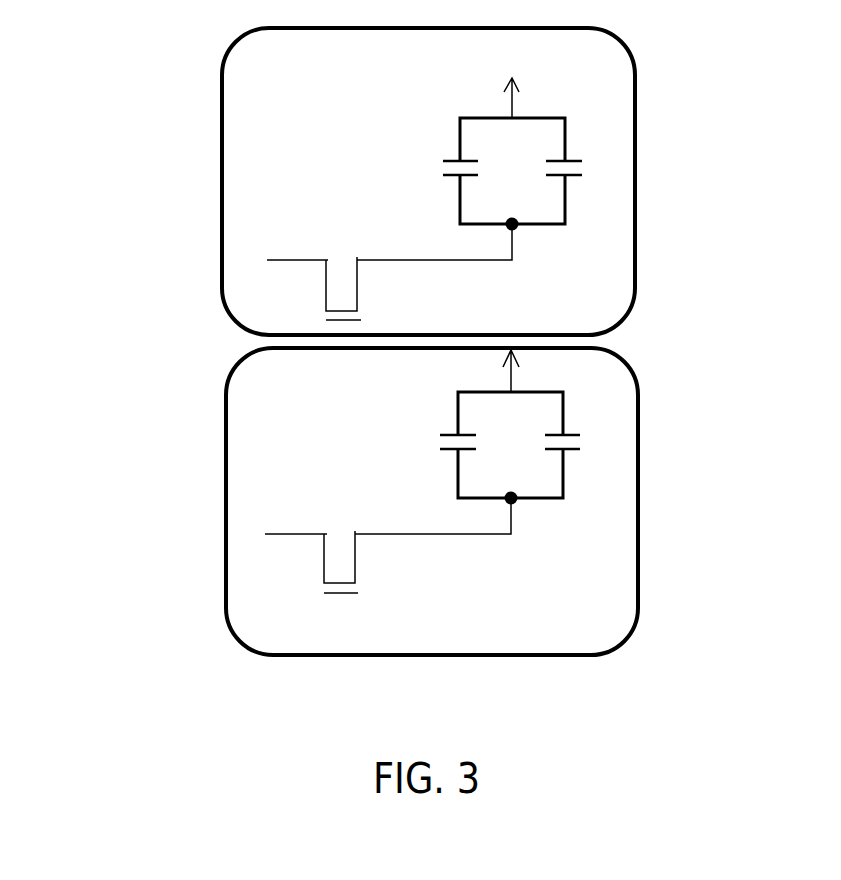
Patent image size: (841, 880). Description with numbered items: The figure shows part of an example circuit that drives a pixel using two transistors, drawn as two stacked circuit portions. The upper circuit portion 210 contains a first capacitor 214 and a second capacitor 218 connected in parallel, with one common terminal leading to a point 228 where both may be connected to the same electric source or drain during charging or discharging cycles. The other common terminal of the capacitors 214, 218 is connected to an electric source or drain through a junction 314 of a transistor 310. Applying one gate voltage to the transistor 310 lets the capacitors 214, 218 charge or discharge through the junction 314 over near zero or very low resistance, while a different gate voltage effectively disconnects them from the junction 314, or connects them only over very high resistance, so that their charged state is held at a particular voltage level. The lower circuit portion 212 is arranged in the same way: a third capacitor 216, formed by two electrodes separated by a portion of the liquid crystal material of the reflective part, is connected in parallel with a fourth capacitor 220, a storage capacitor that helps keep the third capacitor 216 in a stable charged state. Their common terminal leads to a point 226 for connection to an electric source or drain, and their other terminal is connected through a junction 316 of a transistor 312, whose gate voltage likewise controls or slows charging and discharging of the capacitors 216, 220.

The circuit portion 210 is at (593, 54).
The circuit portion 212 is at (583, 612).
The first capacitor 214 is at (570, 167).
The third capacitor 216 is at (562, 440).
The second capacitor 218 is at (440, 167).
The fourth capacitor 220 is at (440, 442).
The point 226 is at (527, 370).
The point 228 is at (528, 97).
The transistor 310 is at (318, 293).
The transistor 312 is at (302, 566).
The junction 314 is at (290, 253).
The junction 316 is at (282, 526).